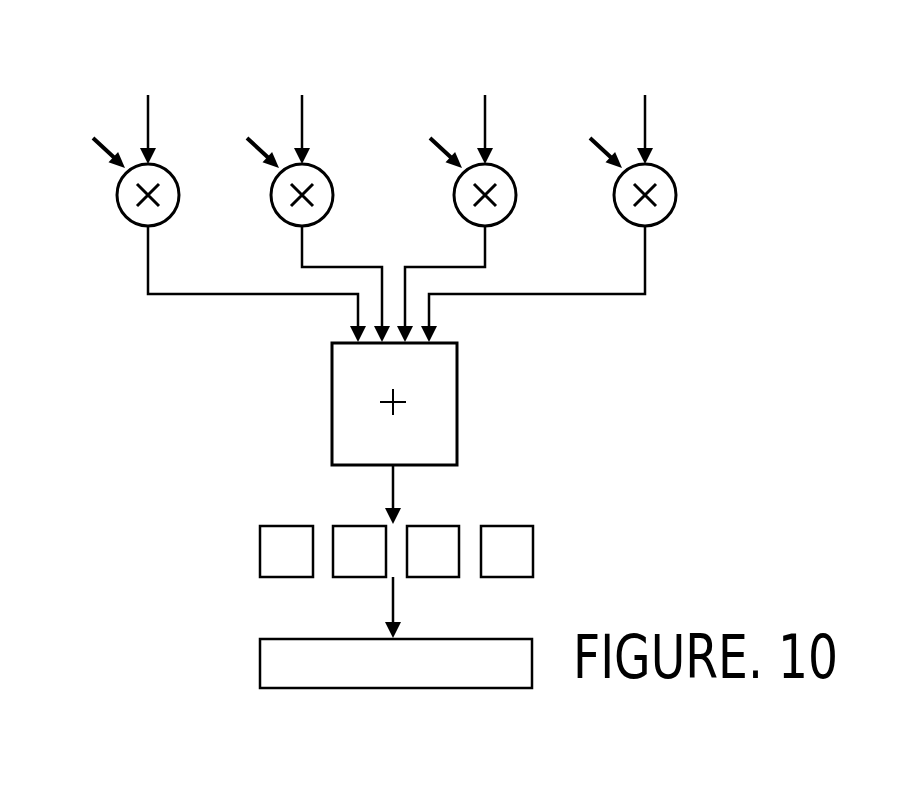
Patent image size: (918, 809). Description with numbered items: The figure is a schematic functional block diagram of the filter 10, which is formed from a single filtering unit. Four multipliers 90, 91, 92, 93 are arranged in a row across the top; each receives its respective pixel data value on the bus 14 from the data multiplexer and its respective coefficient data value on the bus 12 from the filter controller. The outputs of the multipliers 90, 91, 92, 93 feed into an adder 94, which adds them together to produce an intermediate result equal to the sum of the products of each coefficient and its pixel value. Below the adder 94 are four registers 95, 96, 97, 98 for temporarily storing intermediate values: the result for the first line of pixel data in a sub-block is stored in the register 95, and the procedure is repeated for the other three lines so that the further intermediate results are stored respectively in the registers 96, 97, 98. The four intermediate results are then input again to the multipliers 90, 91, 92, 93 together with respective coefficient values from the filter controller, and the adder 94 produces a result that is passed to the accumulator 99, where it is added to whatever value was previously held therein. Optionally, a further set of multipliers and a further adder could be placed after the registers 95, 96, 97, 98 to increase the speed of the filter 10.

The filter 10 is at (226, 439).
The bus 12 is at (602, 156).
The bus 14 is at (677, 92).
The multiplier 90 is at (170, 219).
The multiplier 91 is at (330, 208).
The multiplier 92 is at (458, 204).
The multiplier 93 is at (618, 211).
The adder 94 is at (332, 380).
The register 95 is at (260, 541).
The register 96 is at (342, 525).
The register 97 is at (445, 525).
The register 98 is at (532, 547).
The accumulator 99 is at (260, 657).